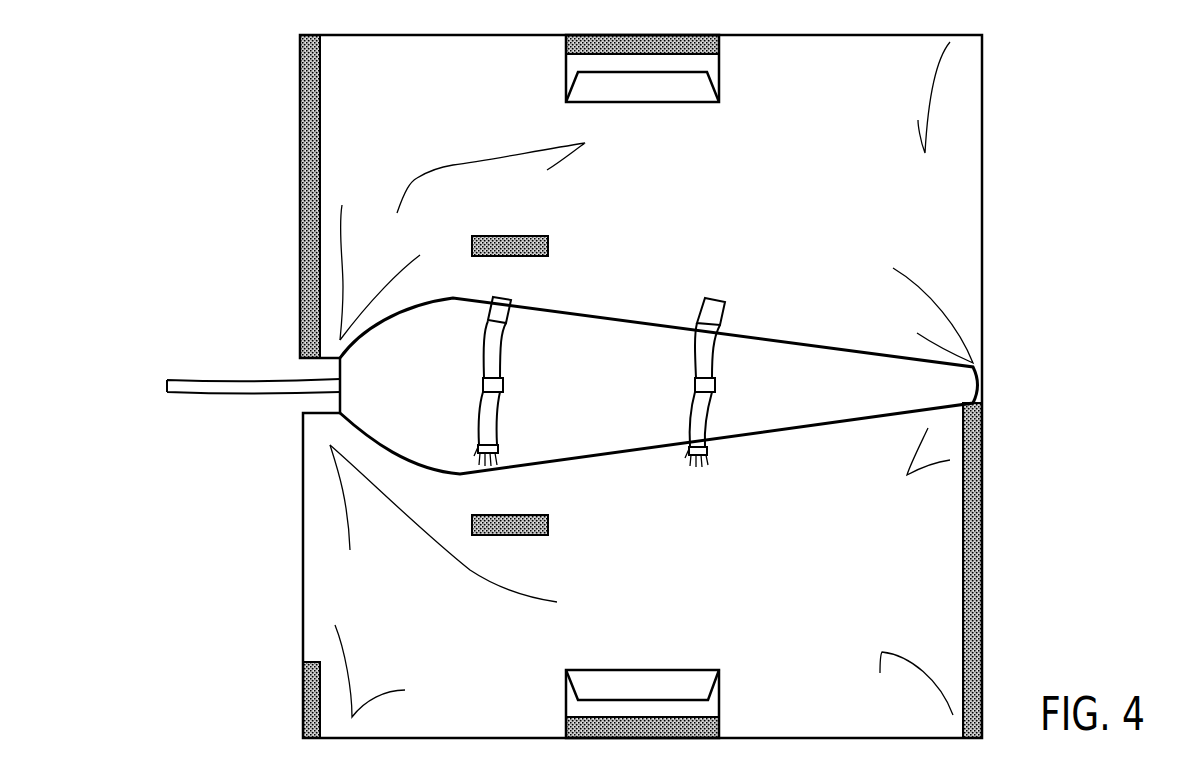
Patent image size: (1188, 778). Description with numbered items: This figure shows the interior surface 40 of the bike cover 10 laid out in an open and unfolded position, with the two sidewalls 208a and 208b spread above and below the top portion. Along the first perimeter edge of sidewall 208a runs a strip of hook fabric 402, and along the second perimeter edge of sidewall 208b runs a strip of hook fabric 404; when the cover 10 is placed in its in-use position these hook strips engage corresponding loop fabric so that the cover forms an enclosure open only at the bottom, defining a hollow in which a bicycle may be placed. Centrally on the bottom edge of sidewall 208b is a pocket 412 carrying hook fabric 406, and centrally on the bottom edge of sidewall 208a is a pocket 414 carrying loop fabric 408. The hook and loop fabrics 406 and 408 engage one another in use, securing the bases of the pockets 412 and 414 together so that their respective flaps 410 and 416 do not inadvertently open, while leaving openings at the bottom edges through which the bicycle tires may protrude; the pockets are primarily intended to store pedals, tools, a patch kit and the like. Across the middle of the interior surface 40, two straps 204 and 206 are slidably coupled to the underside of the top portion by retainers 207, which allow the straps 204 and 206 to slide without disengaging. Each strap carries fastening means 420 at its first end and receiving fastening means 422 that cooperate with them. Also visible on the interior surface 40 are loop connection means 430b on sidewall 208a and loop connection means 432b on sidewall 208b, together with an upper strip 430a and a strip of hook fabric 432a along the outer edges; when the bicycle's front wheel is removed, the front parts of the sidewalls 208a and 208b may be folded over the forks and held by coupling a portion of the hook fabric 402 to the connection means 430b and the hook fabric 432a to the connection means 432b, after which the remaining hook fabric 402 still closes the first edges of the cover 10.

The cover 10 is at (1118, 67).
The interior surface 40 is at (1018, 203).
The strap 204 is at (498, 349).
The strap 206 is at (700, 351).
The retainer 207 is at (503, 385).
The sidewall 208a is at (771, 200).
The sidewall 208b is at (771, 586).
The hook fabric 402 is at (303, 266).
The hook fabric 404 is at (983, 490).
The hook fabric 406 is at (719, 718).
The loop fabric 408 is at (719, 48).
The flap 410 is at (718, 684).
The pocket 412 is at (567, 708).
The pocket 414 is at (567, 64).
The flap 416 is at (705, 83).
The fastening means 420 is at (500, 448).
The receiving fastening means 422 is at (512, 302).
The upper wall pad 430a is at (303, 72).
The loop connection means 430b is at (548, 247).
The hook fabric 432a is at (303, 692).
The loop connection means 432b is at (548, 526).